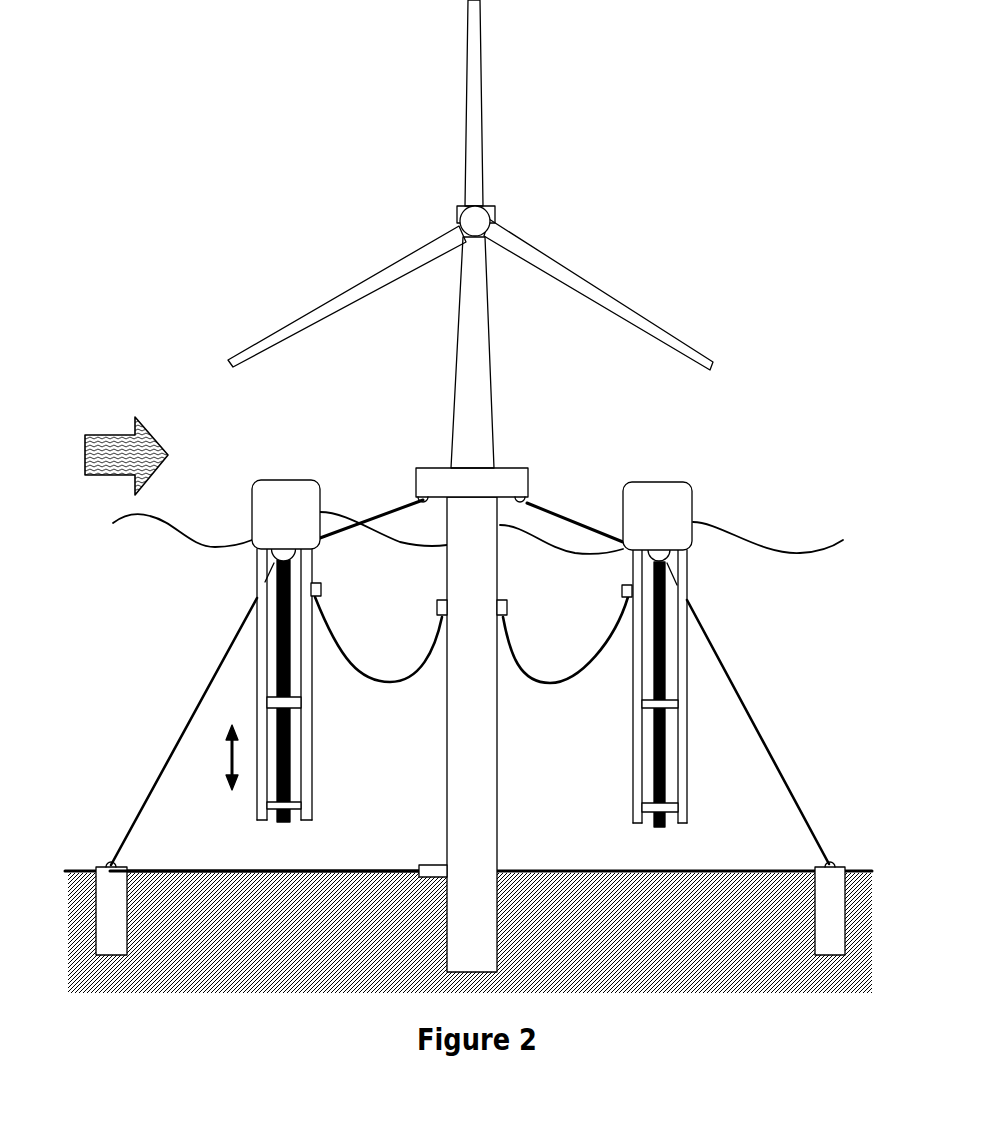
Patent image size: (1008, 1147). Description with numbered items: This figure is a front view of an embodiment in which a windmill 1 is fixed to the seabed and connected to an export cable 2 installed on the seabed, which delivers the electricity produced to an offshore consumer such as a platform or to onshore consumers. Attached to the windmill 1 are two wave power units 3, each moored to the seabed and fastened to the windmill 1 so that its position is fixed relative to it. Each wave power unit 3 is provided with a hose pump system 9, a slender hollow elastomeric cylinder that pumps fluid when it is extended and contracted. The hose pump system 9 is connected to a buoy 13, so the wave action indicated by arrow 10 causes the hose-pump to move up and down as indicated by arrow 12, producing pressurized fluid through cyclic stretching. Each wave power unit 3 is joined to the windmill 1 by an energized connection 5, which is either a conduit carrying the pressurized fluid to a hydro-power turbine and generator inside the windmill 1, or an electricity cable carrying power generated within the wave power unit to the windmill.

The windmill 1 is at (488, 371).
The export cable 2 is at (341, 870).
The wave power unit 3 is at (766, 619).
The energized connection 5 is at (550, 688).
The hose pump system 9 is at (670, 757).
The arrow indicating wave action 10 is at (126, 449).
The arrow indicating hose-pump movement 12 is at (219, 757).
The buoy 13 is at (677, 497).